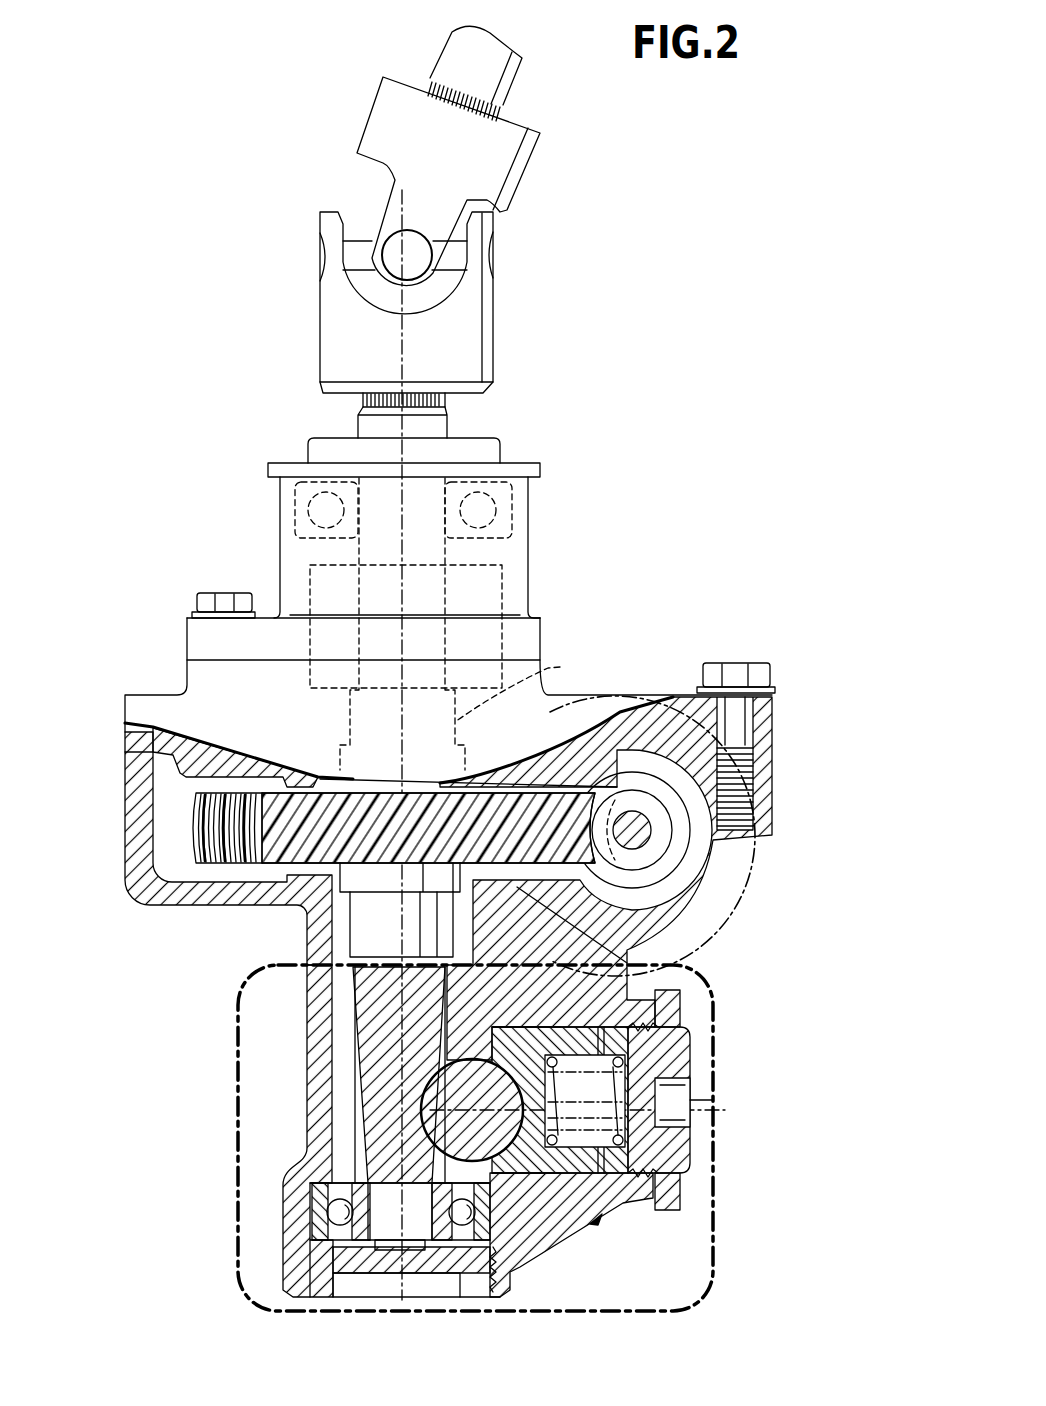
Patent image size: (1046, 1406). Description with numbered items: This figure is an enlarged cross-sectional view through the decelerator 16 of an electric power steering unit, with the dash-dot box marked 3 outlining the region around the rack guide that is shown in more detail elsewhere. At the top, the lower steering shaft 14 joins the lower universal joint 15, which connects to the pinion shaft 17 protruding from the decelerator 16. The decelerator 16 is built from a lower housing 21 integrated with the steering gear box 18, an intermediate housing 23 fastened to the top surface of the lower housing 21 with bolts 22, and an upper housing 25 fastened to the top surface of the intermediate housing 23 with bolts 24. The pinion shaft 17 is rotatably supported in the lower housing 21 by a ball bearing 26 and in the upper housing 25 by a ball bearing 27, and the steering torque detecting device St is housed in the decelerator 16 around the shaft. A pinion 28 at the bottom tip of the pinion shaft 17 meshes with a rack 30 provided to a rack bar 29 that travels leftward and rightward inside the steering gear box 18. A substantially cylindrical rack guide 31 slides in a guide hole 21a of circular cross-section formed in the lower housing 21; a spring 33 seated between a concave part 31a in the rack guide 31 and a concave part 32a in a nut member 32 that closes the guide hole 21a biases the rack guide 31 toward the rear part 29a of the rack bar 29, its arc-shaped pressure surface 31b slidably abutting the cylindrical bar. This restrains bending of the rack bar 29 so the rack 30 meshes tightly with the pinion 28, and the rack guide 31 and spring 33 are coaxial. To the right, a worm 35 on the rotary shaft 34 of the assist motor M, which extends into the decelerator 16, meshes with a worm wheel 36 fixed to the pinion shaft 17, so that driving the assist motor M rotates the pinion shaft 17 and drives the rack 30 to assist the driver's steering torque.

The lower steering shaft 14 is at (507, 78).
The lower universal joint 15 is at (326, 180).
The decelerator 16 is at (682, 618).
The pinion shaft 17 is at (524, 687).
The steering gear box 18 is at (296, 1122).
The lower housing 21 is at (217, 907).
The guide hole 21a is at (557, 925).
The bolts 22 is at (733, 673).
The intermediate housing 23 is at (218, 713).
The bolts 24 is at (227, 602).
The upper housing 25 is at (298, 548).
The ball bearing 26 is at (338, 1212).
The ball bearing 27 is at (485, 510).
The pinion 28 is at (362, 1093).
The rack bar 29 is at (464, 1048).
The rear part of the rack bar 29a is at (515, 1055).
The rack 30 is at (433, 1078).
The rack guide 31 is at (552, 1182).
The concave part 31a is at (568, 982).
The pressure surface 31b is at (503, 1133).
The nut member 32 is at (692, 1051).
The concave part 32a is at (657, 1087).
The spring 33 is at (620, 1140).
The rotary shaft 34 is at (643, 837).
The worm 35 is at (628, 797).
The worm wheel 36 is at (253, 800).
The steering torque detecting device St is at (500, 588).
The assist motor M is at (715, 930).
The FIG. 3 section region 3 is at (230, 1042).